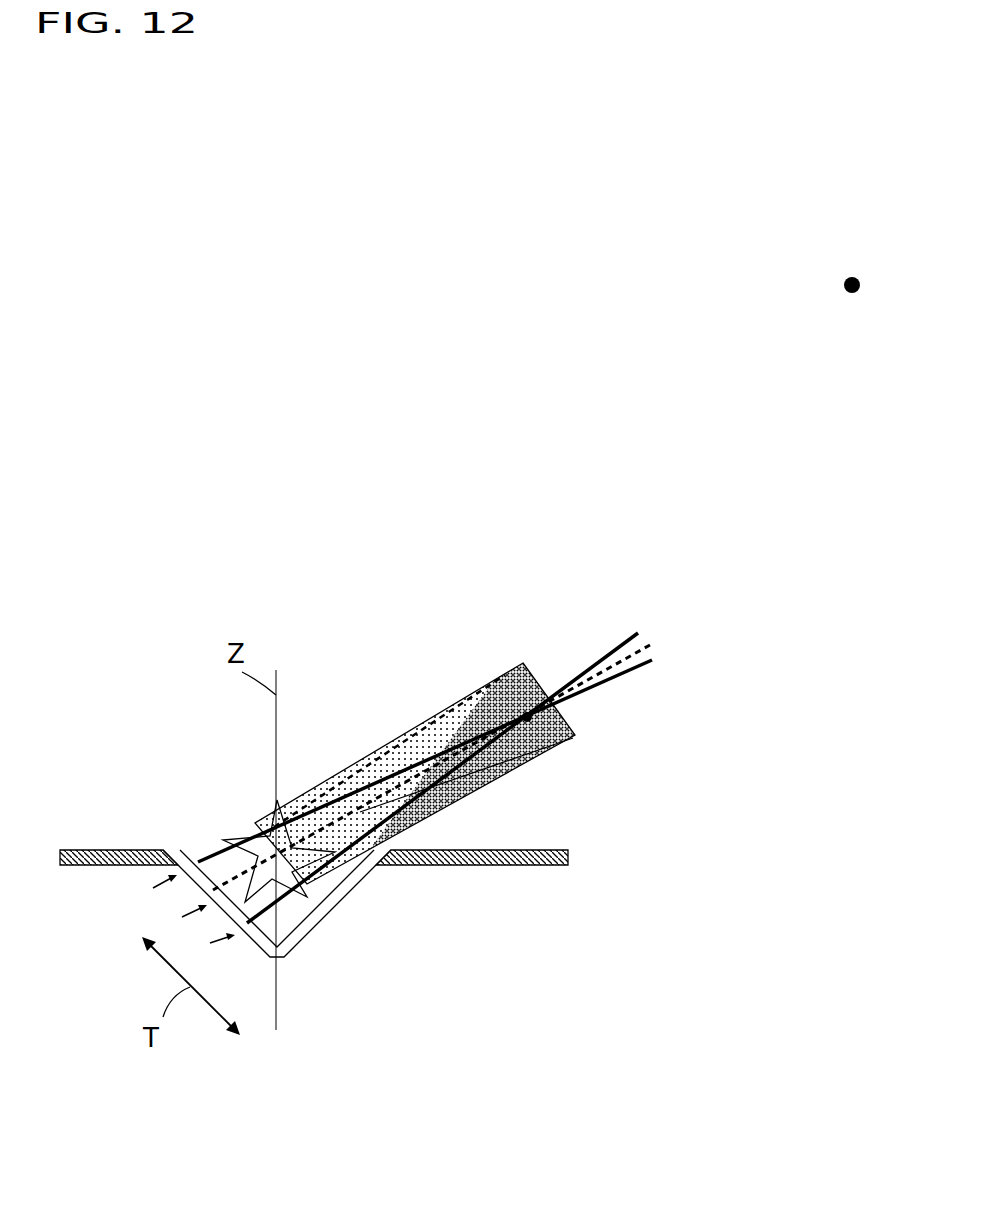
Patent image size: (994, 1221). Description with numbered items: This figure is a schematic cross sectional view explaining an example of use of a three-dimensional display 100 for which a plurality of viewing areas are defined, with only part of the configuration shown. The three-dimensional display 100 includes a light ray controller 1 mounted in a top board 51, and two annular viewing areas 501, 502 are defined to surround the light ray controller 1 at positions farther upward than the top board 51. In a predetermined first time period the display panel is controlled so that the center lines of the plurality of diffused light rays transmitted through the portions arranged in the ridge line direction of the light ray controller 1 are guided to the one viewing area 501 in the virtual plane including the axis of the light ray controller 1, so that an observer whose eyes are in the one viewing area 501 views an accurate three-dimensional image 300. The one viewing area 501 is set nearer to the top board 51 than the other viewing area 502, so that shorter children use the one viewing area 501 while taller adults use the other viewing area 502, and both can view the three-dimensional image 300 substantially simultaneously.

The light ray controller 1 is at (342, 902).
The top board 51 is at (131, 848).
The three-dimensional display 100 is at (383, 1003).
The three-dimensional image 300 is at (212, 852).
The one viewing area 501 is at (548, 745).
The other viewing area 502 is at (846, 294).